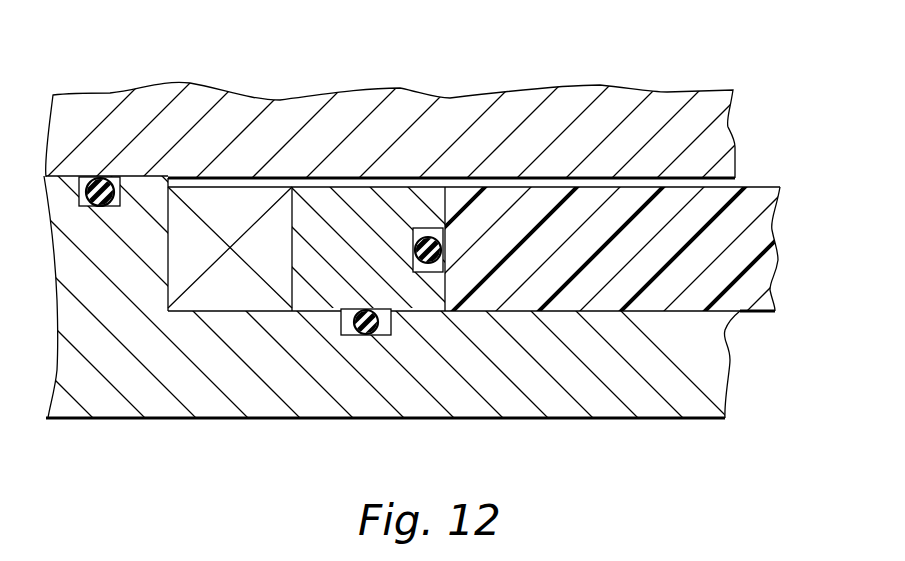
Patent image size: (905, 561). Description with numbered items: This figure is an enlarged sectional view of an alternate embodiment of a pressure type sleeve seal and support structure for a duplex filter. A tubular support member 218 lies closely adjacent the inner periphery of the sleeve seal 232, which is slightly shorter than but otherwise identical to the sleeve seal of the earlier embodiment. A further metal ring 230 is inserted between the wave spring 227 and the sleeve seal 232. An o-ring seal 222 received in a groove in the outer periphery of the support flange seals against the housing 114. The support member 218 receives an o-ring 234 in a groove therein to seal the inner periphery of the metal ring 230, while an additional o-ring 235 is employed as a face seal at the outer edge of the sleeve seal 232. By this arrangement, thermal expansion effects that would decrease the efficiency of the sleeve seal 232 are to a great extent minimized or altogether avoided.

The housing 114 is at (472, 110).
The support member 218 is at (505, 407).
The o-ring seal 222 is at (102, 180).
The wave spring 227 is at (233, 190).
The metal ring 230 is at (360, 188).
The sleeve seal 232 is at (758, 298).
The o-ring 234 is at (365, 335).
The o-ring 235 is at (430, 237).